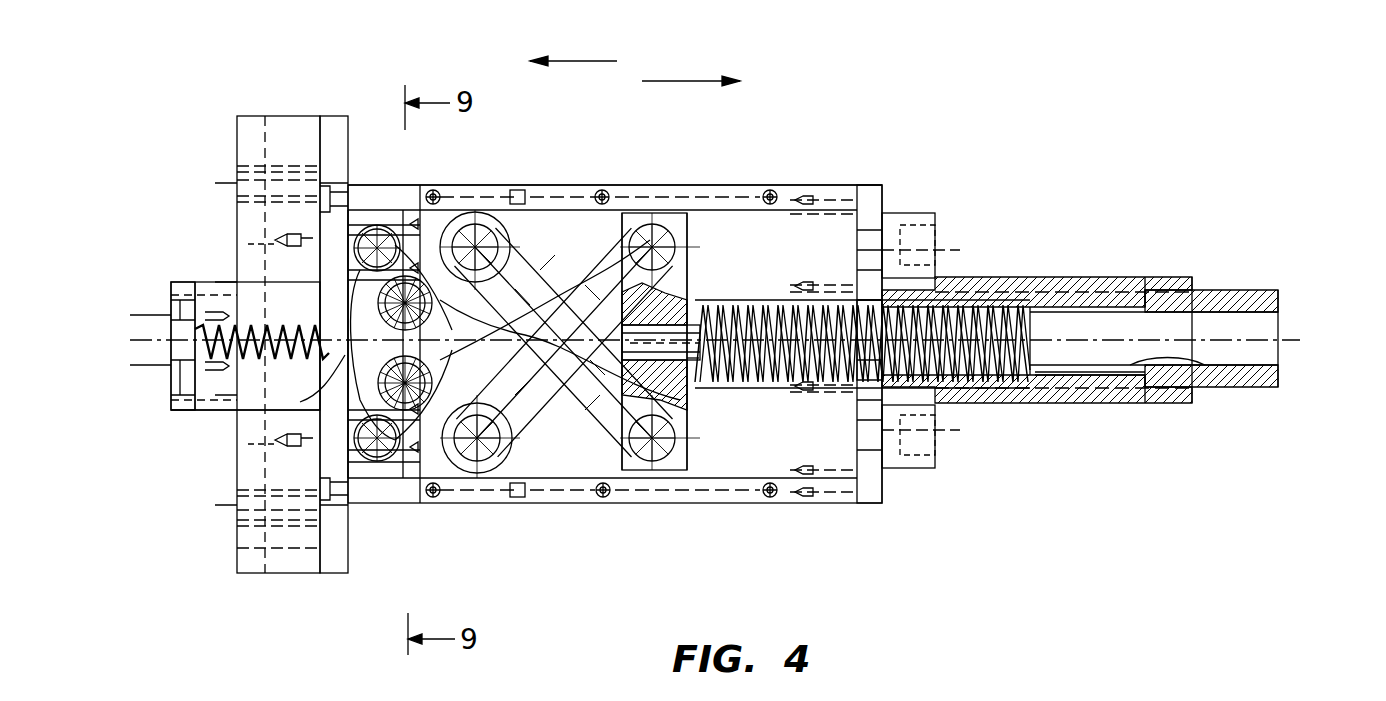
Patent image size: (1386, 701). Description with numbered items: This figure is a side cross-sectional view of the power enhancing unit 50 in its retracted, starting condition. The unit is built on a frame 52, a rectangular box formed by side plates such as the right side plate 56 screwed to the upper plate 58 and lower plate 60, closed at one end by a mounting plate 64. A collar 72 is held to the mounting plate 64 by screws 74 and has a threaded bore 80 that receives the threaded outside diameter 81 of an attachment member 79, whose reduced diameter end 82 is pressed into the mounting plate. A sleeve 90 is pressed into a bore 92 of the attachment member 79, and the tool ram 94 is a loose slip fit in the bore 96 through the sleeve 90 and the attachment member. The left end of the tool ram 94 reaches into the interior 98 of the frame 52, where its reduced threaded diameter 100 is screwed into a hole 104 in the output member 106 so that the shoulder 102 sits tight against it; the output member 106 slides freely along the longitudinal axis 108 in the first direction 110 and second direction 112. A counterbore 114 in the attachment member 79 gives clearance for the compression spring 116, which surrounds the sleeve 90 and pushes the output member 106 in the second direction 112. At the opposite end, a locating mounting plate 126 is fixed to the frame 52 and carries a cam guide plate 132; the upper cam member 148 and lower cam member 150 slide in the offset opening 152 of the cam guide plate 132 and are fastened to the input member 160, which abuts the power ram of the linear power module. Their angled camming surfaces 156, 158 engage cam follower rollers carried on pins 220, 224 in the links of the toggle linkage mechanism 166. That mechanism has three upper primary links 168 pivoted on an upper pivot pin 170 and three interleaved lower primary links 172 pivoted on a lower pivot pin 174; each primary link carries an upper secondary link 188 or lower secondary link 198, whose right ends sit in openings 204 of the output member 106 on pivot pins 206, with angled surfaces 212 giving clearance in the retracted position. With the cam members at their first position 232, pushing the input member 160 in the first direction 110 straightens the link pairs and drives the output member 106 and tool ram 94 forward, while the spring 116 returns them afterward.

The power enhancing unit 50 is at (860, 108).
The frame 52 is at (745, 184).
The right side plate 56 is at (565, 200).
The upper plate 58 is at (690, 185).
The lower plate 60 is at (770, 503).
The mounting plate 64 is at (876, 186).
The collar 72 is at (920, 214).
The screws 74 is at (935, 240).
The attachment member 79 is at (1172, 276).
The threaded bore 80 is at (960, 290).
The threaded outside diameter 81 is at (1140, 277).
The reduced diameter end 82 is at (860, 432).
The sleeve 90 is at (1120, 372).
The bore 92 is at (1075, 375).
The tool ram 94 is at (1270, 327).
The bore 96 is at (1200, 365).
The interior 98 is at (790, 186).
The reduced threaded diameter 100 is at (692, 322).
The shoulder 102 is at (690, 385).
The hole 104 is at (725, 305).
The output member 106 is at (690, 410).
The longitudinal axis 108 is at (1270, 342).
The first direction 110 is at (700, 81).
The second direction 112 is at (567, 61).
The counterbore 114 is at (1040, 277).
The compression spring 116 is at (985, 330).
The locating mounting plate 126 is at (338, 116).
The cam guide plate 132 is at (266, 116).
The upper cam member 148 is at (217, 280).
The lower cam member 150 is at (217, 412).
The offset opening 152 is at (300, 402).
The camming surface 156 is at (398, 200).
The camming surface 158 is at (365, 475).
The input member 160 is at (172, 318).
The toggle linkage mechanism 166 is at (535, 440).
The upper primary links 168 is at (500, 248).
The upper pivot pin 170 is at (362, 200).
The lower primary links 172 is at (490, 478).
The lower pivot pin 174 is at (383, 480).
The upper secondary links 188 is at (622, 186).
The lower secondary links 198 is at (662, 470).
The openings 204 is at (660, 470).
The pivot pins 206 is at (676, 247).
The angled surfaces 212 is at (530, 440).
The pin 220 is at (465, 188).
The pin 224 is at (422, 480).
The first position 232 is at (195, 255).